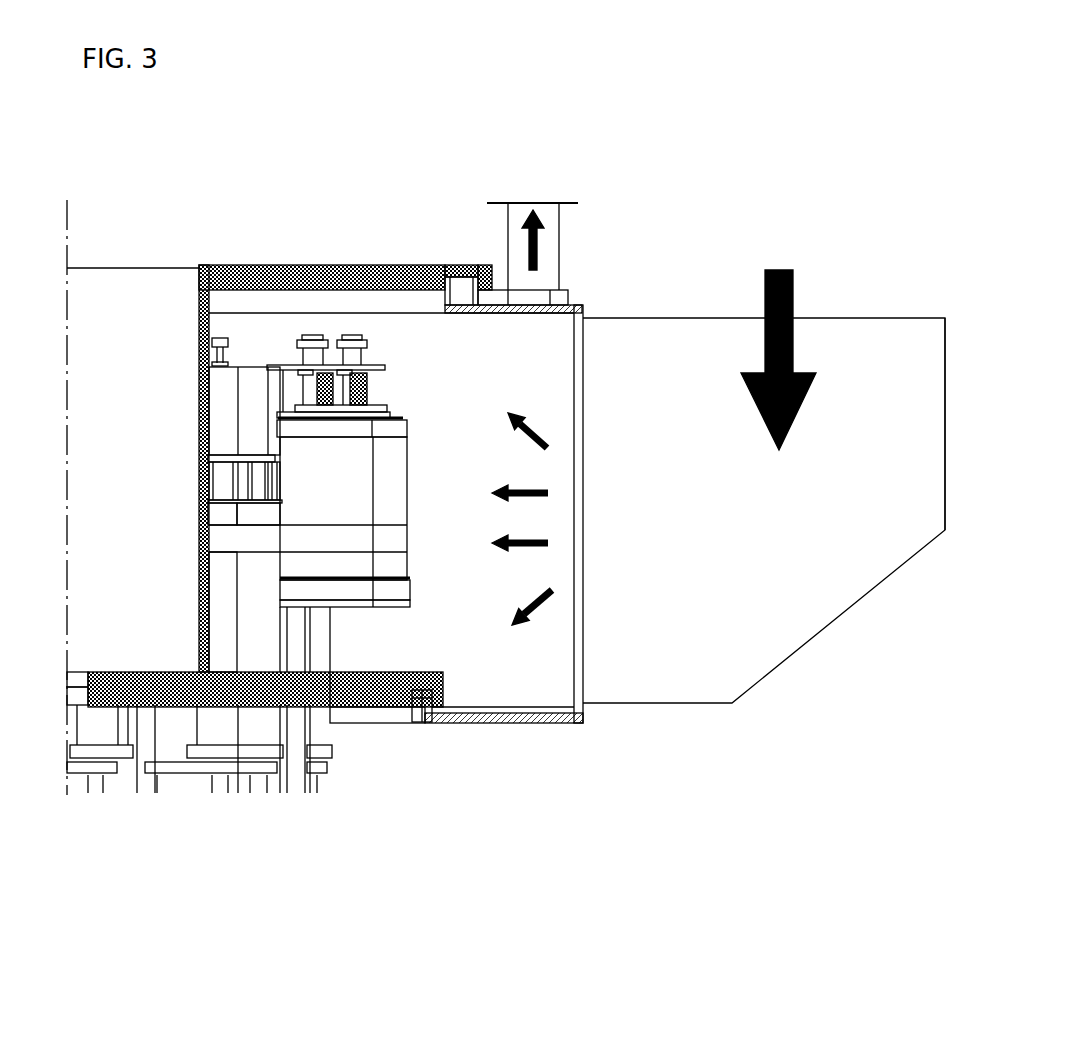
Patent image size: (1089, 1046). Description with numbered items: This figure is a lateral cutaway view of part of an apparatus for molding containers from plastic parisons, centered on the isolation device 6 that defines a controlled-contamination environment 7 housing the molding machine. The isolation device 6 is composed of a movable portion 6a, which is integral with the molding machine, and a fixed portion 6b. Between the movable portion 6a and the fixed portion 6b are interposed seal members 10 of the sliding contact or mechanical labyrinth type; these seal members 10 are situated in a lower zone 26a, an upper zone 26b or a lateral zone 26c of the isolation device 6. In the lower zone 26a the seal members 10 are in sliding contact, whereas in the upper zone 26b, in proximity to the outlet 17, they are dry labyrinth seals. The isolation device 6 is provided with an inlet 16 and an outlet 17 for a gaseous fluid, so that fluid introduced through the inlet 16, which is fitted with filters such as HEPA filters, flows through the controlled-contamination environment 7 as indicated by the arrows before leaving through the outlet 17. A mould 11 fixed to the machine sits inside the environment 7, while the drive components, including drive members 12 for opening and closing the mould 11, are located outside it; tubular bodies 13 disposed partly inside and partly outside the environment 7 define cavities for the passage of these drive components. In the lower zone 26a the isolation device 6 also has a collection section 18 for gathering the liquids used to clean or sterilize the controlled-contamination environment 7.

The isolation device 6 is at (278, 255).
The movable portion 6a is at (153, 697).
The fixed portion 6b is at (460, 718).
The controlled-contamination environment 7 is at (548, 370).
The seal member 10 is at (458, 255).
The mould 11 is at (419, 482).
The drive member 12 is at (200, 474).
The tubular body 13 is at (207, 608).
The inlet 16 is at (855, 360).
The outlet 17 is at (568, 245).
The collection section 18 is at (499, 707).
The lower zone 26a is at (428, 765).
The upper zone 26b is at (387, 255).
The lateral zone 26c is at (968, 420).